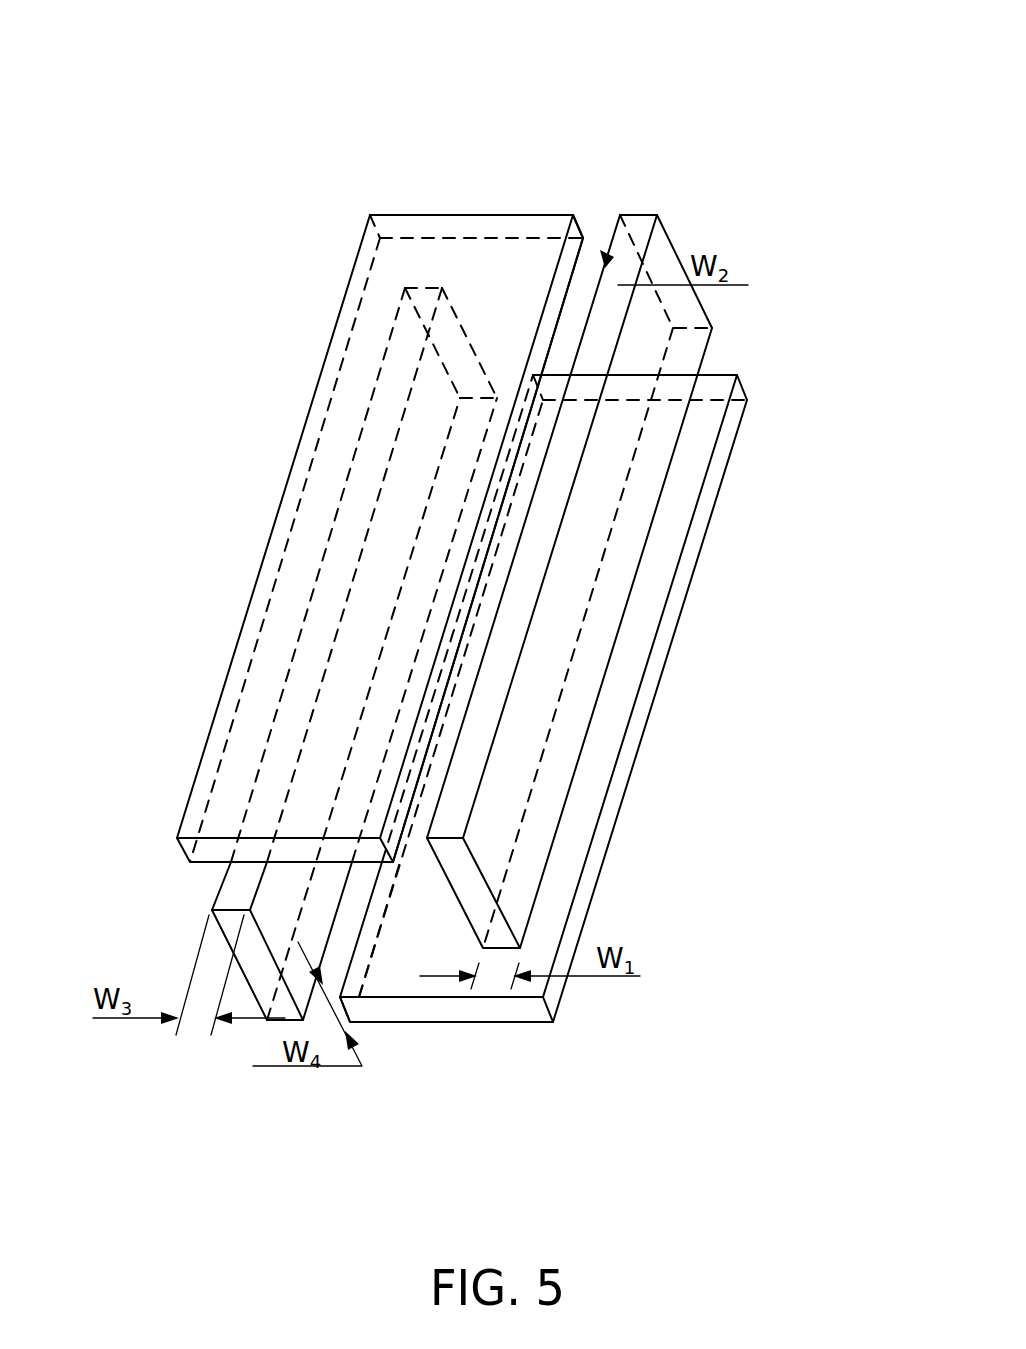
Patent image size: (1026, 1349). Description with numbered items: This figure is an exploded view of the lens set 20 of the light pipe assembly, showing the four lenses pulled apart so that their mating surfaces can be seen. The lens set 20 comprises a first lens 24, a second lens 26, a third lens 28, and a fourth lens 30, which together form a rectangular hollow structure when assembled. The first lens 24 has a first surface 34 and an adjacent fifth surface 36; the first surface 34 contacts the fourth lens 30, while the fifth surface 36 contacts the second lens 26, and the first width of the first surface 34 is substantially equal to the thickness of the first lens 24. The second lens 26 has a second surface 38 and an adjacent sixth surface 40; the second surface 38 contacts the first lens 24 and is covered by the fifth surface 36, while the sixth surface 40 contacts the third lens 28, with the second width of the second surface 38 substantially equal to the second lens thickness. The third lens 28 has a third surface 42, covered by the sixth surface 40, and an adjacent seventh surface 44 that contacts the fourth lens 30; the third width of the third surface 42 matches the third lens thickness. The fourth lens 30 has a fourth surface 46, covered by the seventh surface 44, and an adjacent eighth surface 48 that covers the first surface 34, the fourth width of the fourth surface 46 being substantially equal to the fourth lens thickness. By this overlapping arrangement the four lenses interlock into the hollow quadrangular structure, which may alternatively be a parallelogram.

The lens set 20 is at (342, 92).
The first lens 24 is at (826, 325).
The second lens 26 is at (580, 101).
The third lens 28 is at (83, 763).
The fourth lens 30 is at (455, 1105).
The first surface 34 is at (672, 420).
The fifth surface 36 is at (650, 320).
The second surface 38 is at (618, 285).
The sixth surface 40 is at (474, 258).
The third surface 42 is at (230, 884).
The seventh surface 44 is at (290, 886).
The fourth surface 46 is at (367, 942).
The eighth surface 48 is at (408, 967).